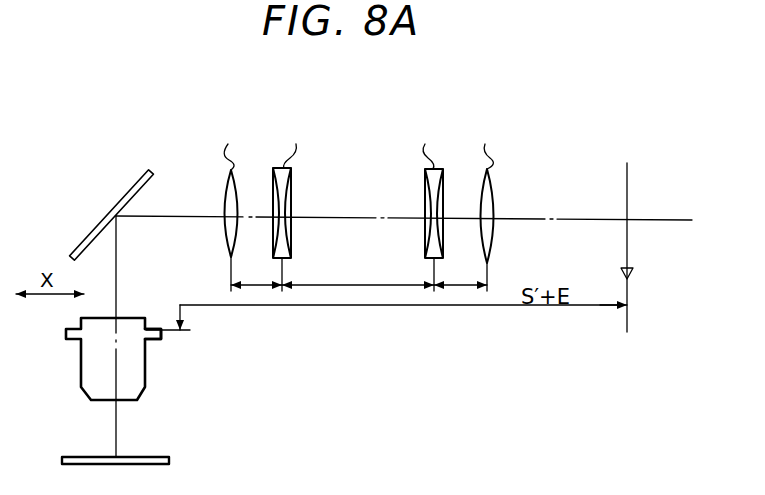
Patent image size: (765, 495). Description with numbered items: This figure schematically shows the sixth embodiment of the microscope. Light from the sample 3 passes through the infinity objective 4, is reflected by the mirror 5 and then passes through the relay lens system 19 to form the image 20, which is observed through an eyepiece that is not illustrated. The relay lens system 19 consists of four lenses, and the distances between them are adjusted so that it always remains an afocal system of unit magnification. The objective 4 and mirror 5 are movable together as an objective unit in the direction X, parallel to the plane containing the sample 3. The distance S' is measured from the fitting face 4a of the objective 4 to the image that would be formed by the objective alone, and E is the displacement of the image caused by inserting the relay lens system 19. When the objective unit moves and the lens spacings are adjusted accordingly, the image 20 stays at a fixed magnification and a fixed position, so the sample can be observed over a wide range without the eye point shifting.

The sample 3 is at (79, 457).
The infinity objective 4 is at (83, 360).
The fitting face 4a is at (155, 328).
The mirror 5 is at (93, 232).
The relay lens system 19 is at (510, 122).
The image 20 is at (628, 181).